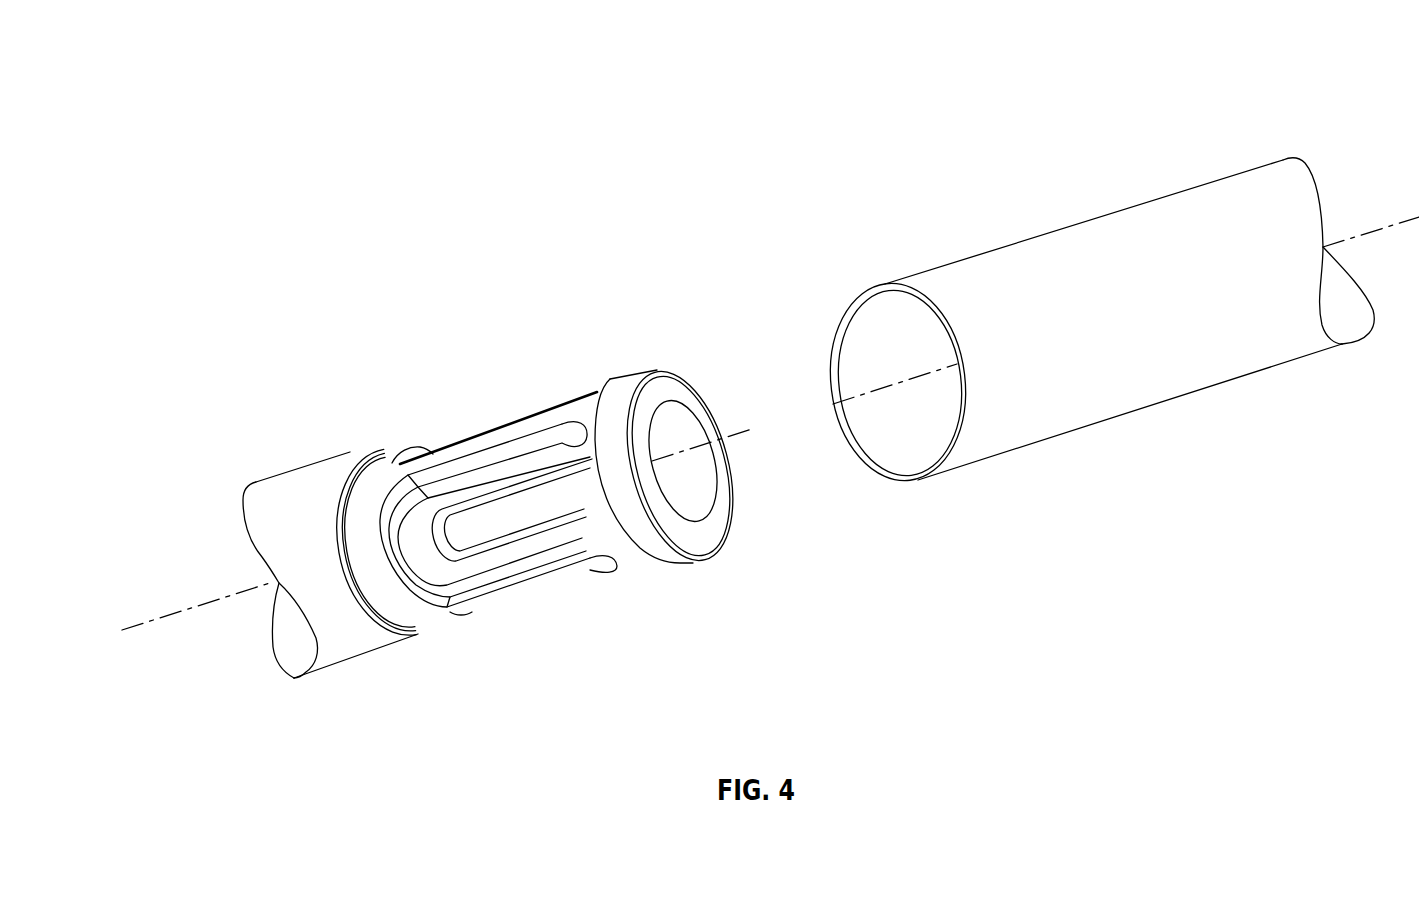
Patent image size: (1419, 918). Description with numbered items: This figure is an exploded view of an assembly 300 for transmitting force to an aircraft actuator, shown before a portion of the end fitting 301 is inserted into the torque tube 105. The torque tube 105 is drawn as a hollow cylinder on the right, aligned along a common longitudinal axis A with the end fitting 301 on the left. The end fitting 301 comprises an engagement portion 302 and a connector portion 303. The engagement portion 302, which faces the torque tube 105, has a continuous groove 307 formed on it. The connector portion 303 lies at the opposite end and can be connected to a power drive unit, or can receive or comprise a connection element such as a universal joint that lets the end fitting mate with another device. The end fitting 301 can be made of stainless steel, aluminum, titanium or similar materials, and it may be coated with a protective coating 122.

The assembly for transmitting force 300 is at (487, 101).
The torque tube 105 is at (1183, 392).
The protective coating 122 is at (1040, 235).
The end fitting 301 is at (500, 603).
The engagement portion 302 is at (670, 340).
The connector portion 303 is at (392, 413).
The continuous groove 307 is at (503, 486).
The longitudinal axis A is at (742, 471).